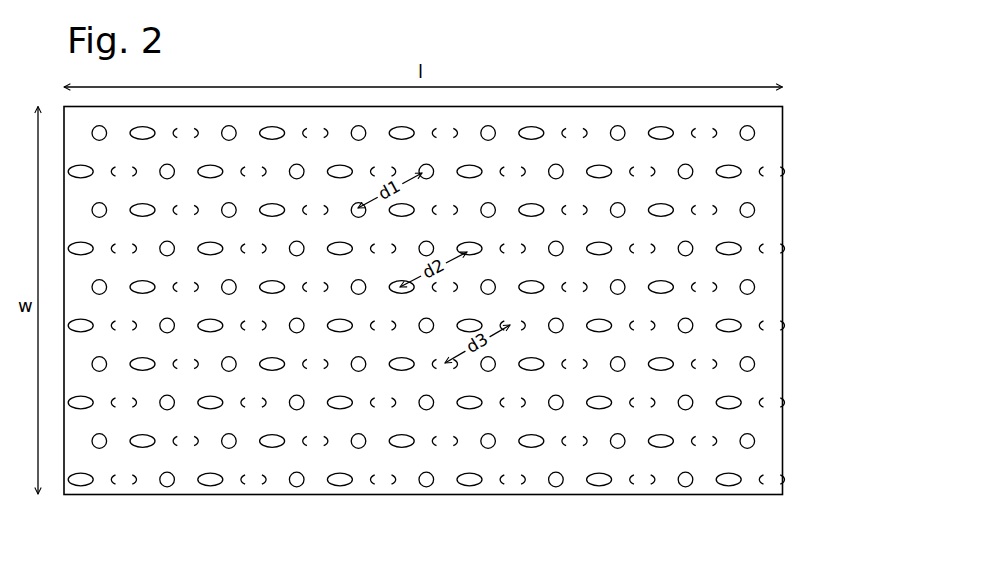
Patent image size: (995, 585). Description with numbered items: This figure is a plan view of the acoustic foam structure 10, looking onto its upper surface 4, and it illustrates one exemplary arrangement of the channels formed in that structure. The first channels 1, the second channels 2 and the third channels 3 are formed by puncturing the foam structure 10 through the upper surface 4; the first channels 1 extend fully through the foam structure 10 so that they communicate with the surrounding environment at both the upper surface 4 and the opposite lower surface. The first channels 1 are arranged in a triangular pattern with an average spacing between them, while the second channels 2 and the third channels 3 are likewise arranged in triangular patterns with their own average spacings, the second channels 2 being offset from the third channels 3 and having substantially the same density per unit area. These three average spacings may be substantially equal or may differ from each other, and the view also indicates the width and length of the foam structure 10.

The first channel 1 is at (174, 481).
The second channel 2 is at (349, 480).
The third channel 3 is at (520, 480).
The upper surface 4 is at (745, 268).
The acoustic foam structure 10 is at (795, 134).